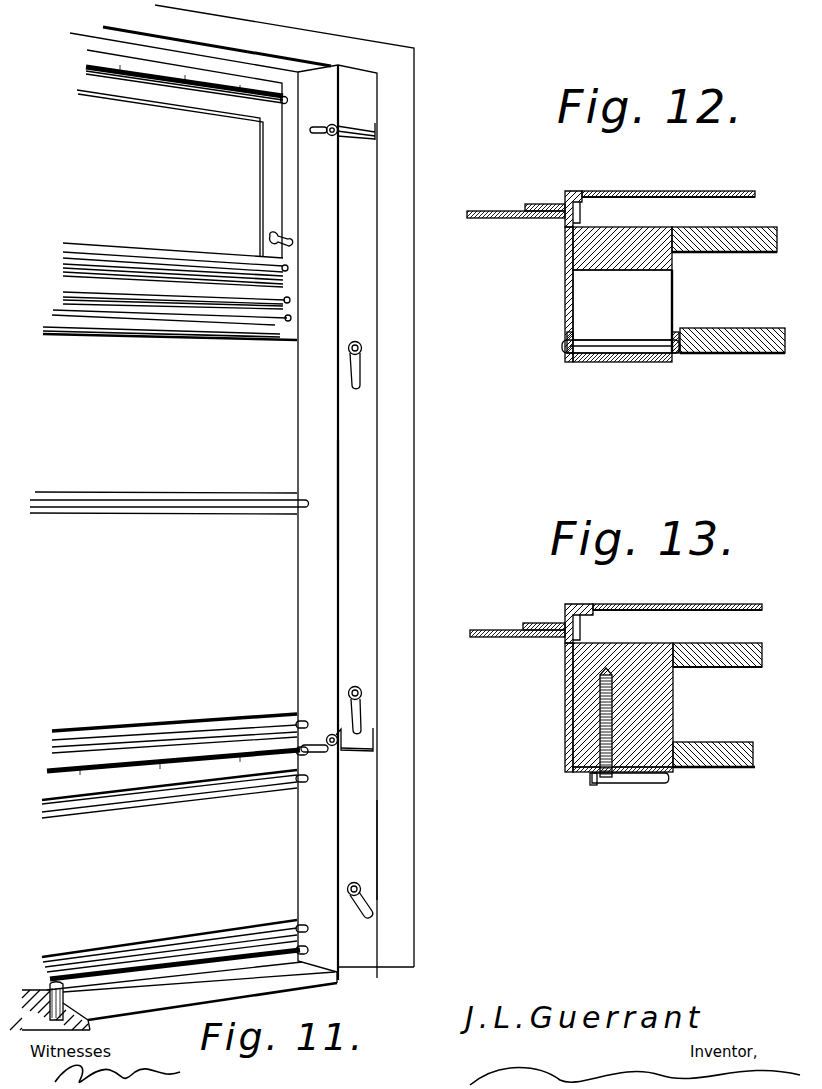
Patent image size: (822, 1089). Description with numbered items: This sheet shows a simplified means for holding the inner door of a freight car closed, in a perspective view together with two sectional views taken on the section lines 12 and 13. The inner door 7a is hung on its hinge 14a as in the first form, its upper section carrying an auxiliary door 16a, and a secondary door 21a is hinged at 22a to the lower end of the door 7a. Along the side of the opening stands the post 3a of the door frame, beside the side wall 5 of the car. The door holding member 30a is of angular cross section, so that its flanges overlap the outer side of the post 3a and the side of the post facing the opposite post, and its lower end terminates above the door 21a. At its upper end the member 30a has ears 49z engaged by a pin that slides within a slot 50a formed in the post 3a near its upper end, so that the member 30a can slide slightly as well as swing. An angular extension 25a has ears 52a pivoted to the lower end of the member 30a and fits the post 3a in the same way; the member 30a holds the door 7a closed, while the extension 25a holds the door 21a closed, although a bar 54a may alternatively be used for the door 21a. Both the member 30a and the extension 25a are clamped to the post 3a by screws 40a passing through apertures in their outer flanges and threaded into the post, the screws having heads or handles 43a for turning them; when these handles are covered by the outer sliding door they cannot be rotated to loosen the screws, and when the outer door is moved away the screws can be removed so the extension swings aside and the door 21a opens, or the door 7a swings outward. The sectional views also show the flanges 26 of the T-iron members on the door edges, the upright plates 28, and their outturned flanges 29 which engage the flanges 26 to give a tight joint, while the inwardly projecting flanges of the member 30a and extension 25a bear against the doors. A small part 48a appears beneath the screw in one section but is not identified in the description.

In FIG. 11, the post 3a is at (368, 113).
In FIG. 12, the post 3a is at (660, 258).
In FIG. 13, the post 3a is at (583, 693).
In FIG. 12, the side wall 5 is at (770, 352).
In FIG. 13, the side wall 5 is at (736, 768).
In FIG. 11, the door 7a is at (203, 499).
In FIG. 12, the door 7a is at (494, 212).
In FIG. 13, the door 7a is at (488, 632).
In FIG. 11, the section line 12 is at (308, 130).
In FIG. 13, the section line 12 is at (735, 622).
In FIG. 11, the section line 13 is at (425, 350).
In FIG. 11, the hinge 14a is at (150, 338).
In FIG. 11, the auxiliary door 16a is at (185, 207).
In FIG. 11, the secondary door 21a is at (283, 844).
In FIG. 11, the hinge 22a is at (128, 765).
In FIG. 11, the angular extension 25a is at (365, 864).
In FIG. 12, the flanges 26 is at (586, 198).
In FIG. 13, the flanges 26 is at (597, 600).
In FIG. 12, the upright plates 28 is at (641, 191).
In FIG. 13, the upright plates 28 is at (690, 604).
In FIG. 12, the outturned flanges 29 is at (567, 194).
In FIG. 13, the outturned flanges 29 is at (567, 614).
In FIG. 11, the door holding member 30a is at (340, 502).
In FIG. 12, the door holding member 30a is at (565, 251).
In FIG. 11, the screws 40a is at (362, 692).
In FIG. 13, the screws 40a is at (598, 733).
In FIG. 11, the heads or handles 43a is at (360, 718).
In FIG. 13, the retaining plate 48a is at (641, 782).
In FIG. 11, the ears 49z is at (334, 124).
In FIG. 12, the ears 49z is at (680, 332).
In FIG. 11, the slot 50a is at (320, 126).
In FIG. 12, the slot 50a is at (585, 306).
In FIG. 11, the ears 52a is at (336, 755).
In FIG. 11, the bar 54a is at (157, 985).